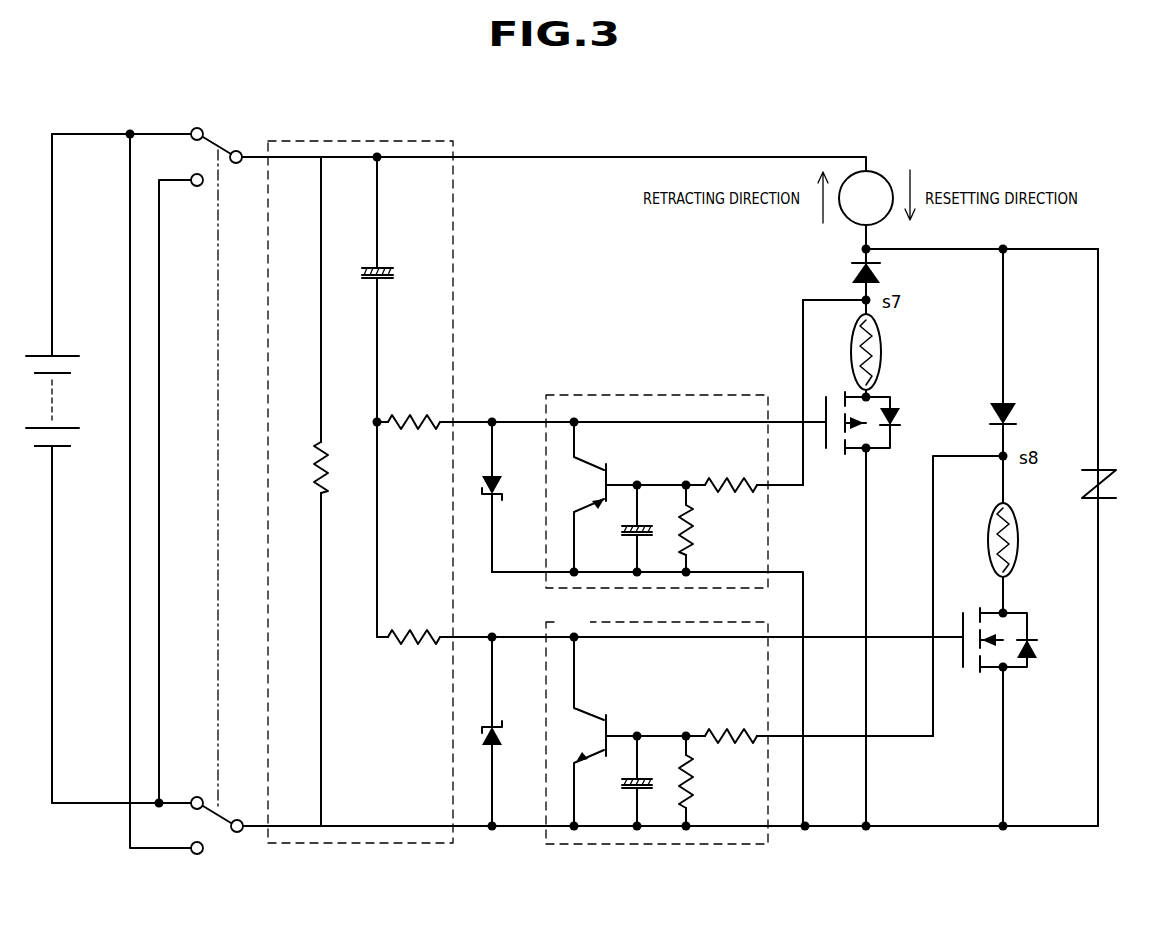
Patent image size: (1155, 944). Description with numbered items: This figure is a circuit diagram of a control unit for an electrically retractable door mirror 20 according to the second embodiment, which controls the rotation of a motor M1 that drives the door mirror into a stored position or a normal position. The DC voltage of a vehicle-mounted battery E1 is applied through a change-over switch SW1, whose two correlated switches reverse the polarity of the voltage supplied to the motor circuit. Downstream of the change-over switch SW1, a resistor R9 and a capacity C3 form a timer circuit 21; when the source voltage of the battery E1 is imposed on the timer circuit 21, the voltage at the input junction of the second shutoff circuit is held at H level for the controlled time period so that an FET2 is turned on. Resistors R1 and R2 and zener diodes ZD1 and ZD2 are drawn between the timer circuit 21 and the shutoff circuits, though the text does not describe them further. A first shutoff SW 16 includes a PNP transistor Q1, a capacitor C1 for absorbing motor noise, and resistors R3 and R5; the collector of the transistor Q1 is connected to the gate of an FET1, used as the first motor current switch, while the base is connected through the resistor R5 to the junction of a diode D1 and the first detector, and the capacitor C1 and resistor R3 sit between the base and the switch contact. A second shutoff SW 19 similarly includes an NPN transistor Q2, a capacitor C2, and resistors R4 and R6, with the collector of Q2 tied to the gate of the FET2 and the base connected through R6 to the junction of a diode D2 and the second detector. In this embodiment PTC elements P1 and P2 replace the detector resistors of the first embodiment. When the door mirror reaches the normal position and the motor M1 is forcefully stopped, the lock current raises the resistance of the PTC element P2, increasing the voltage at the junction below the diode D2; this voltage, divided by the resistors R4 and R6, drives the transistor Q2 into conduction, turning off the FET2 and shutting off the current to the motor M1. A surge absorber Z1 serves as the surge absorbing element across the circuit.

The control unit for an electrically retractable door mirror 20 is at (500, 152).
The first shutoff SW 16 is at (670, 395).
The second shutoff SW 19 is at (668, 846).
The timer circuit 21 is at (353, 846).
The battery E1 is at (46, 468).
The change-over switch SW1 is at (225, 140).
The motor M1 is at (878, 174).
The resistor R1 is at (434, 405).
The resistor R2 is at (434, 622).
The resistor R3 is at (702, 528).
The resistor R4 is at (702, 781).
The resistor R5 is at (720, 471).
The resistor R6 is at (785, 722).
The resistor R9 is at (305, 491).
The capacitor C1 is at (626, 528).
The capacitor C2 is at (627, 781).
The capacity C3 is at (391, 397).
The zener diode ZD1 is at (512, 497).
The zener diode ZD2 is at (512, 731).
The PNP transistor Q1 is at (597, 497).
The NPN transistor Q2 is at (597, 731).
The diode D1 is at (851, 281).
The diode D2 is at (1017, 352).
The PTC P1 is at (880, 348).
The PTC P2 is at (1017, 534).
The FET FET1 is at (886, 609).
The FET FET2 is at (1022, 717).
The surge absorber Z1 is at (1115, 537).